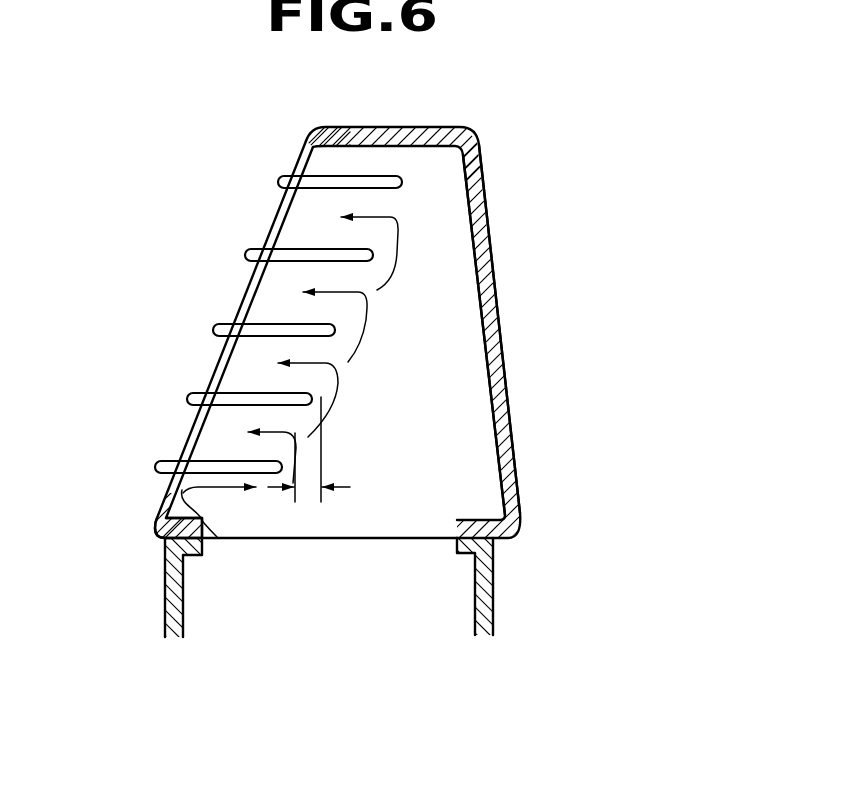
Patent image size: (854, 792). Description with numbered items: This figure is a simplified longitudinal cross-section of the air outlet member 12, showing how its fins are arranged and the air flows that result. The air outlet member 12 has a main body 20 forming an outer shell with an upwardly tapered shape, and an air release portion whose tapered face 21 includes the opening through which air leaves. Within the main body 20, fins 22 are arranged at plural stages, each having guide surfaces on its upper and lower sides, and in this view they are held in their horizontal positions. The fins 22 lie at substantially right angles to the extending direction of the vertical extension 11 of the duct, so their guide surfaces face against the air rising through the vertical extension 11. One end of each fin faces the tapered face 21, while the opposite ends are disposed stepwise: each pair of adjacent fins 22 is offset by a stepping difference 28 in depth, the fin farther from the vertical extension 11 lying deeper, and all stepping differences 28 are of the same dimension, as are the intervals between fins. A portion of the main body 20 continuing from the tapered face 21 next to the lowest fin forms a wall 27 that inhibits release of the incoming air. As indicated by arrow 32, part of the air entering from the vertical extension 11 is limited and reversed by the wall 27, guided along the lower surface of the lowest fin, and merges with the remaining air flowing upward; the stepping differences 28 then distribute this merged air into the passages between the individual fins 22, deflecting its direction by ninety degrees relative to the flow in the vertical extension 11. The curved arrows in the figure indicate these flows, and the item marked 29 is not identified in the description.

The vertical extension 11 is at (495, 578).
The air outlet member 12 is at (344, 345).
The main body 20 is at (502, 350).
The tapered face 21 is at (302, 172).
The fins 22 is at (303, 248).
The wall 27 is at (155, 528).
The stepping difference 28 is at (312, 494).
The flow path 29 is at (340, 393).
The arrow 32 is at (178, 492).